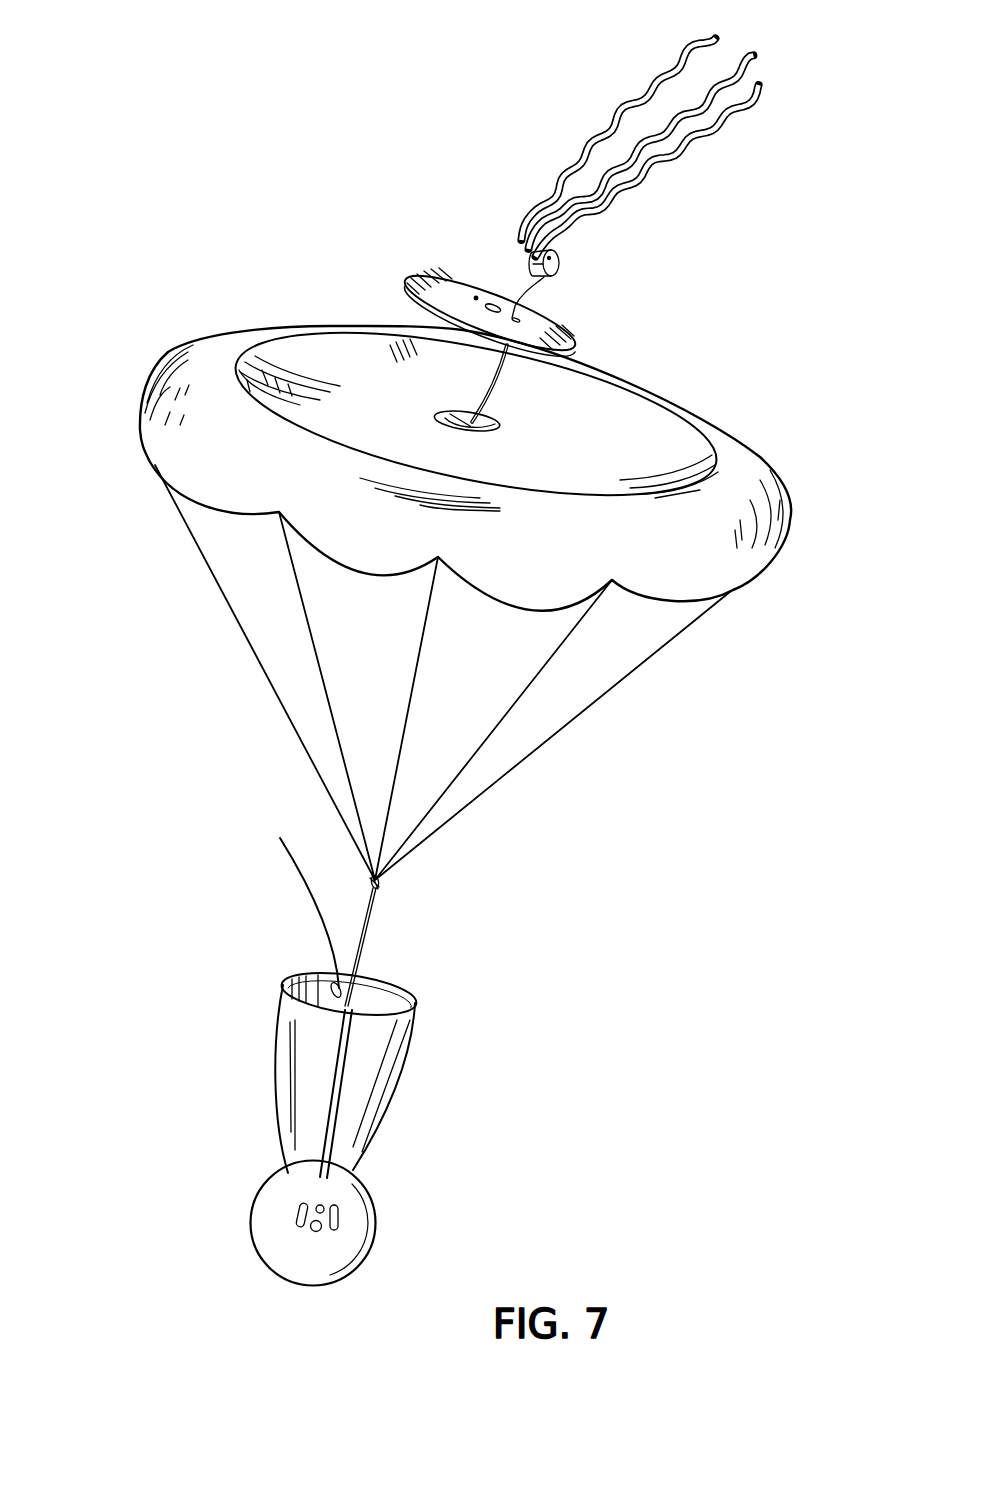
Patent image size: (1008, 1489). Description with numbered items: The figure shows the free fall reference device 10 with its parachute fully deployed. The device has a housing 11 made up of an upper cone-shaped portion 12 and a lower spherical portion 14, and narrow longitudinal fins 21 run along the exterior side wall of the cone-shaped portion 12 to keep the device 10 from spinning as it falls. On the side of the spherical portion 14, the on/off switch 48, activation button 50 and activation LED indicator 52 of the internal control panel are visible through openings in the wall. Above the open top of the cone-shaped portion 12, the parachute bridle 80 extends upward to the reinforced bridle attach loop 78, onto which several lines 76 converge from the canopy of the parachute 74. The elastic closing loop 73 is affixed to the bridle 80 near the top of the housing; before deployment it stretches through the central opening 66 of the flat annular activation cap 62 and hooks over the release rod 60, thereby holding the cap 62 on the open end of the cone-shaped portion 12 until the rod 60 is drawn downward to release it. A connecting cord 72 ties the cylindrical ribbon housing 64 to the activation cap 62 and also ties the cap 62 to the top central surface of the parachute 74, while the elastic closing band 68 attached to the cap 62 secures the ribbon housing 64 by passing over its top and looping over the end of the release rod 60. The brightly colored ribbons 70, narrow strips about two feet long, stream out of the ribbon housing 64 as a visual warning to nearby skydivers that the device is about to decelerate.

The reference device 10 is at (553, 887).
The housing 11 is at (263, 1042).
The upper cone-shaped portion 12 is at (373, 1040).
The lower spherical portion 14 is at (377, 1233).
The longitudinal fins 21 is at (398, 1090).
The on/off switch 48 is at (298, 1210).
The activation button 50 is at (316, 1232).
The activation LED indicator 52 is at (318, 1203).
The release rod 60 is at (325, 977).
The activation cap 62 is at (408, 275).
The ribbon housing 64 is at (557, 264).
The central opening 66 is at (497, 304).
The elastic closing band 68 is at (567, 328).
The ribbons 70 is at (710, 120).
The connecting cord 72 is at (527, 288).
The closing loop 73 is at (296, 894).
The parachute 74 is at (652, 568).
The lines 76 is at (558, 732).
The bridle attach loop 78 is at (380, 882).
The parachute bridle 80 is at (365, 930).